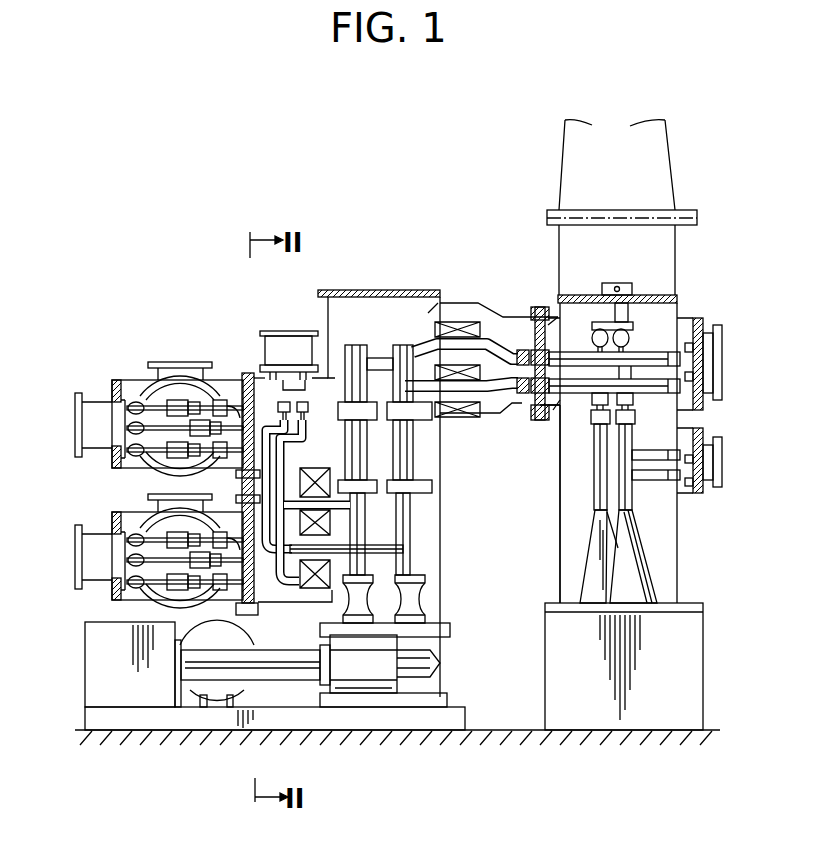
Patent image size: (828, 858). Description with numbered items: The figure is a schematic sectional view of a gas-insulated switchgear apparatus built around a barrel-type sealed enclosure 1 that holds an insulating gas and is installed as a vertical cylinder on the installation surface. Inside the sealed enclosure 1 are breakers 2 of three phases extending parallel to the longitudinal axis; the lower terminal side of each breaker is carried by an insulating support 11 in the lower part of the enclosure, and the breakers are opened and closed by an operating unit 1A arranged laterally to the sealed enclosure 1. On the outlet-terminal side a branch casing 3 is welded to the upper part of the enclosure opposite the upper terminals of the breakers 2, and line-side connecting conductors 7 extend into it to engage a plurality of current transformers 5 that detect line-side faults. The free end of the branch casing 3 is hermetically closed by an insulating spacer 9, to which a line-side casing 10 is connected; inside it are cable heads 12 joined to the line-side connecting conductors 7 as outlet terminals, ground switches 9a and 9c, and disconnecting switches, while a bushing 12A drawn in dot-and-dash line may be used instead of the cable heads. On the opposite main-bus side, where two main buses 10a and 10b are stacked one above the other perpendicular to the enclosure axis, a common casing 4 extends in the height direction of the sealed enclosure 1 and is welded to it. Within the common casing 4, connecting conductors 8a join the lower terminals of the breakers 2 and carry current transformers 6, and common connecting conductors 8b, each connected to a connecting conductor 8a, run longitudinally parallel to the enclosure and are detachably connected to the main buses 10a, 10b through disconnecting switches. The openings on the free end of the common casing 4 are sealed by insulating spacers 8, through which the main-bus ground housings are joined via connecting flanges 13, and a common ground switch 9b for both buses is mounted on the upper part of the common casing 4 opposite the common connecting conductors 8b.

The sealed enclosure 1 is at (443, 524).
The operating unit 1A is at (95, 636).
The breakers 2 is at (442, 457).
The branch casing 3 is at (458, 305).
The common casing 4 is at (280, 601).
The current transformers 5 is at (482, 303).
The current transformers 6 is at (317, 587).
The line-side connecting conductors 7 is at (506, 402).
The insulating spacer 8 is at (254, 604).
The connecting conductors 8a is at (388, 549).
The common connecting conductors 8b is at (272, 476).
The insulating spacer 9 is at (540, 421).
The ground switch 9a is at (712, 328).
The common ground switch 9b is at (290, 333).
The ground switch 9c is at (713, 494).
The line-side casing 10 is at (678, 533).
The main bus 10a is at (128, 377).
The main bus 10b is at (125, 512).
The insulating support 11 is at (426, 589).
The cable heads 12 is at (587, 540).
The bushing 12A is at (566, 150).
The connecting flanges 13 is at (243, 374).